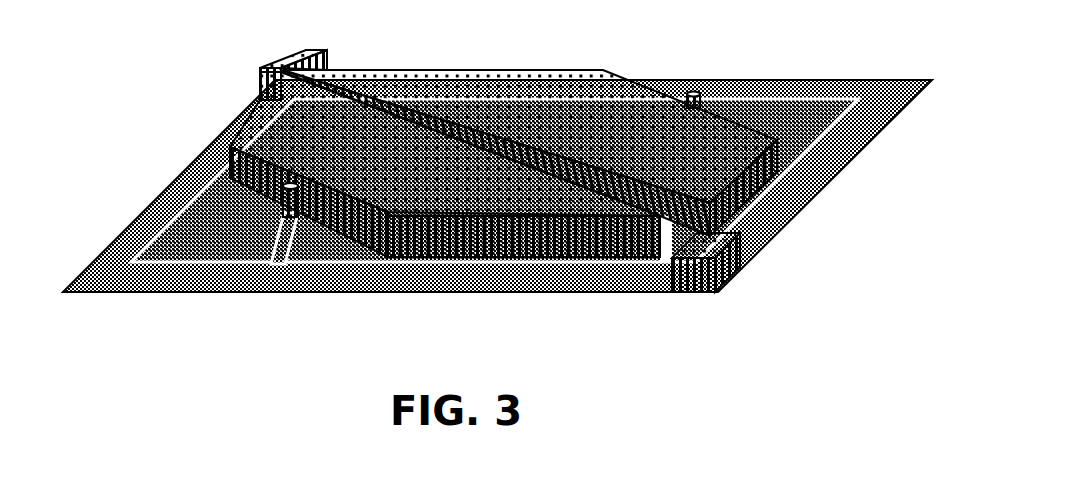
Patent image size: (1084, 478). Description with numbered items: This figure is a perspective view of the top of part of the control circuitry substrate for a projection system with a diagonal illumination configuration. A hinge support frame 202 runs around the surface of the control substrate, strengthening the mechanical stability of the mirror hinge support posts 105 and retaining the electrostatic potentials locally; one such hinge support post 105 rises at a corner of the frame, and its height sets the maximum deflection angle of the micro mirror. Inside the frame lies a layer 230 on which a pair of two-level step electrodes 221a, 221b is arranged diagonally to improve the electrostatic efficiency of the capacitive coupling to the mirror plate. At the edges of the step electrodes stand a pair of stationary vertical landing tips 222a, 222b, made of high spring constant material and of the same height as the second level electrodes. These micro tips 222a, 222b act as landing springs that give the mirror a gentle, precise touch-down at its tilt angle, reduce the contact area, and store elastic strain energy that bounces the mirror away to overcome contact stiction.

The hinge support frame 202 is at (806, 216).
The dielectric layer 230 is at (815, 170).
The step electrode 221a is at (298, 143).
The step electrode 221b is at (478, 84).
The stationary vertical landing tip 222a is at (258, 205).
The stationary vertical landing tip 222b is at (730, 46).
The hinge support post 105 is at (740, 269).